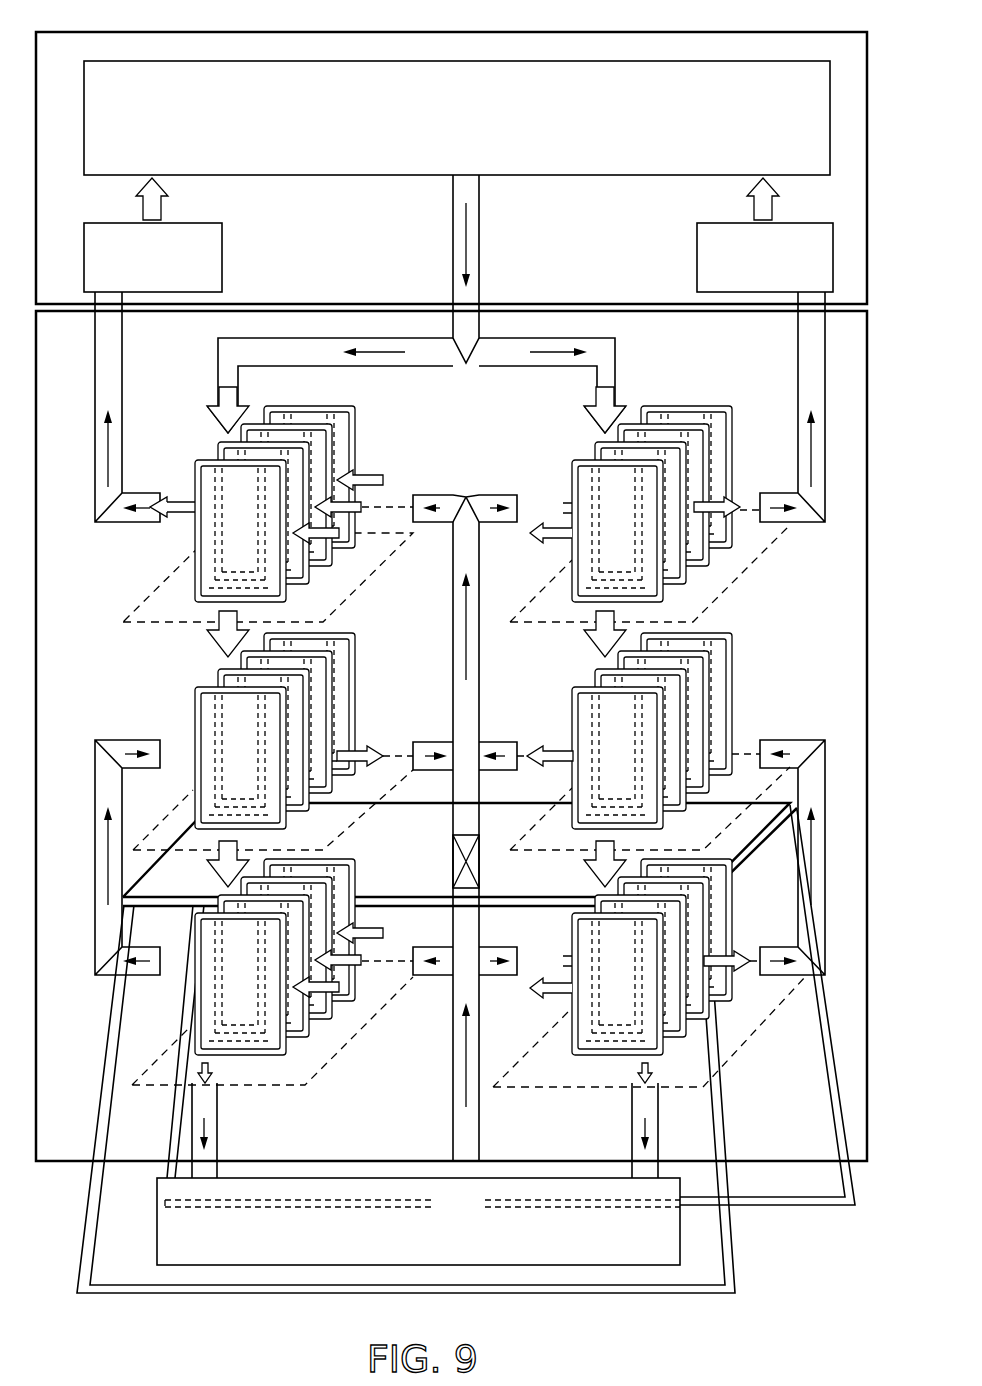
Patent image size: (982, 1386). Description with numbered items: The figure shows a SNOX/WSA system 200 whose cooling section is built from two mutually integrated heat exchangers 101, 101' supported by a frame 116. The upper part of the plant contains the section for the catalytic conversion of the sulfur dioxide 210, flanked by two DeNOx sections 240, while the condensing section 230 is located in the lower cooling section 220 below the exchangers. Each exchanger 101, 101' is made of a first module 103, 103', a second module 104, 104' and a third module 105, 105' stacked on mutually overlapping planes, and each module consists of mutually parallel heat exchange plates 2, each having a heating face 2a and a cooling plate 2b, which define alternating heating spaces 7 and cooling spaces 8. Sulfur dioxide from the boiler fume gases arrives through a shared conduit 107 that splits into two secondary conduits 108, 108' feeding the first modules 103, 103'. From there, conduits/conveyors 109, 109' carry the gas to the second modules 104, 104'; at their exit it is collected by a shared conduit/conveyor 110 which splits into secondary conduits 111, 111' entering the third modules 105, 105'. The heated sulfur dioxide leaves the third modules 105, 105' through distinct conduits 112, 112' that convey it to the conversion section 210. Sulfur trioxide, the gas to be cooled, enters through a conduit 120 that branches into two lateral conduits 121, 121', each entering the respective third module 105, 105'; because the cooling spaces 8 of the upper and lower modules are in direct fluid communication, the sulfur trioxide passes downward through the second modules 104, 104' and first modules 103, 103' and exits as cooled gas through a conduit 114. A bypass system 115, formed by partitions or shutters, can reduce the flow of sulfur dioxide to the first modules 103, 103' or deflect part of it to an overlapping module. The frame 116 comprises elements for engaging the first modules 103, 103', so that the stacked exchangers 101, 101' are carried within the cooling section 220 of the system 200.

The SNOX/WSA system 200 is at (445, 31).
The section for the catalytic reaction/conversion of the sulfur dioxide 210 is at (333, 178).
The section for the removal of the NOx (DeNOx) 240 is at (223, 280).
The conduit 120 is at (481, 226).
The lateral conduit 121 is at (330, 353).
The lateral conduit 121' is at (552, 353).
The heat exchange plate 2 is at (258, 452).
The heating face 2a is at (275, 455).
The cooling plate 2b is at (300, 452).
The third module 105 is at (266, 494).
The third module 105' is at (656, 494).
The second module 104 is at (268, 720).
The second module 104' is at (654, 720).
The first module 103 is at (268, 948).
The first module 103' is at (655, 948).
The conduit/conveyor 112 is at (107, 436).
The conduit/conveyor 112' is at (800, 443).
The secondary conduit 111 is at (439, 533).
The secondary conduit 111' is at (498, 533).
The shared conduit/conveyor 110 is at (457, 753).
The conduit/conveyor 109 is at (105, 857).
The conduit/conveyor 109' is at (806, 822).
The secondary conduit 108 is at (431, 985).
The secondary conduit 108' is at (504, 985).
The shared conduit 107 is at (481, 1100).
The bypass system 115 is at (452, 874).
The conduit 114 is at (193, 1083).
The heat exchanger 101 is at (230, 1120).
The heat exchanger 101' is at (624, 1116).
The heating space 7 is at (297, 1047).
The cooling space 8 is at (317, 1027).
The cooling section 220 is at (63, 1166).
The condensing section 230 is at (422, 1204).
The frame 116 is at (732, 1250).